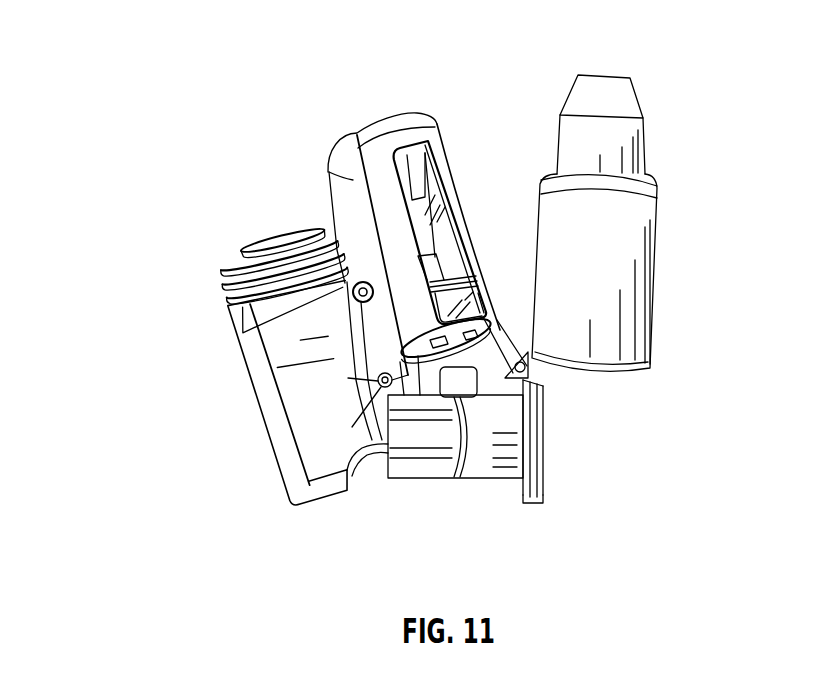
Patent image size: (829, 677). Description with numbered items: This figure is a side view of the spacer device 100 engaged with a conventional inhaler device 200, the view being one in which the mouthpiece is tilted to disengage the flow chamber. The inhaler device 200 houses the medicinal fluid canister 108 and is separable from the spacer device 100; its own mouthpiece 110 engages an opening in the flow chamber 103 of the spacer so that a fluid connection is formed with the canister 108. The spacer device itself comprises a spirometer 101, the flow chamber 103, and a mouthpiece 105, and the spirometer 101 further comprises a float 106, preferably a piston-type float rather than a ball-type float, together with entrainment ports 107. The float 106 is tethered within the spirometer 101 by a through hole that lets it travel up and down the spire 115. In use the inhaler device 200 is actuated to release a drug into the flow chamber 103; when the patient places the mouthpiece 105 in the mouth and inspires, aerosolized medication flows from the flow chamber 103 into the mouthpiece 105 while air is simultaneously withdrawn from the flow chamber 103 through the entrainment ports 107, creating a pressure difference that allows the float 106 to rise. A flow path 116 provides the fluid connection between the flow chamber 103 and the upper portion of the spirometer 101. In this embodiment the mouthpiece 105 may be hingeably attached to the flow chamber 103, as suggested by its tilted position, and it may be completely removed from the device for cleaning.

The spacer device 100 is at (141, 57).
The spirometer 101 is at (438, 231).
The flow chamber 103 is at (412, 435).
The mouthpiece 105 is at (627, 140).
The float 106 is at (467, 283).
The entrainment ports 107 is at (360, 390).
The medicinal fluid canister 108 is at (278, 243).
The mouthpiece of the inhaler device 110 is at (378, 458).
The spire 115 is at (407, 184).
The flow path 116 is at (343, 183).
The inhaler device 200 is at (260, 412).